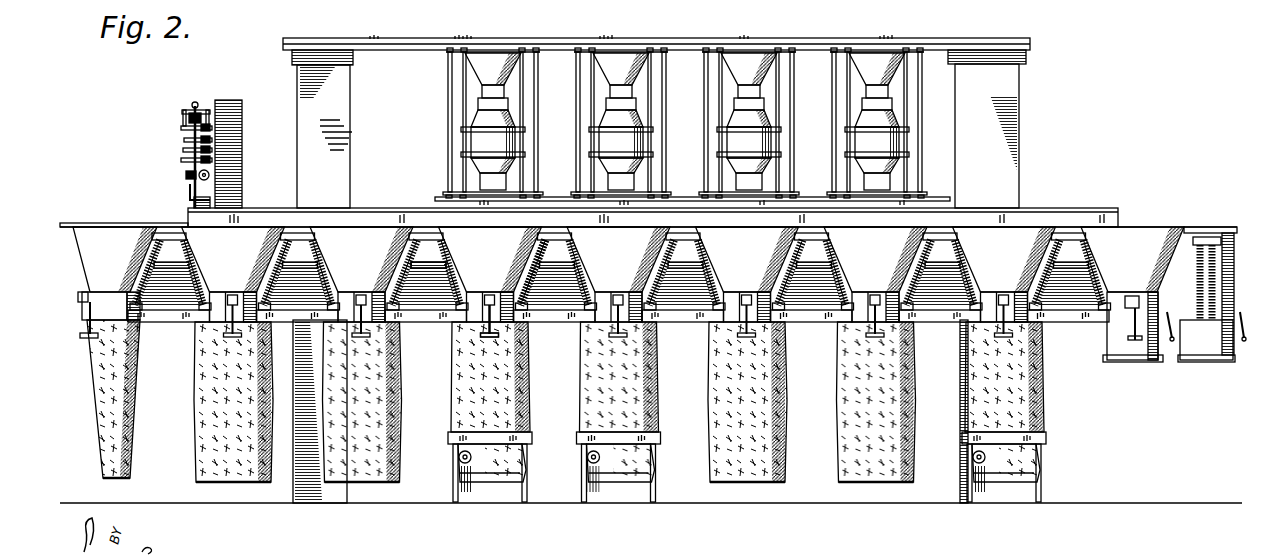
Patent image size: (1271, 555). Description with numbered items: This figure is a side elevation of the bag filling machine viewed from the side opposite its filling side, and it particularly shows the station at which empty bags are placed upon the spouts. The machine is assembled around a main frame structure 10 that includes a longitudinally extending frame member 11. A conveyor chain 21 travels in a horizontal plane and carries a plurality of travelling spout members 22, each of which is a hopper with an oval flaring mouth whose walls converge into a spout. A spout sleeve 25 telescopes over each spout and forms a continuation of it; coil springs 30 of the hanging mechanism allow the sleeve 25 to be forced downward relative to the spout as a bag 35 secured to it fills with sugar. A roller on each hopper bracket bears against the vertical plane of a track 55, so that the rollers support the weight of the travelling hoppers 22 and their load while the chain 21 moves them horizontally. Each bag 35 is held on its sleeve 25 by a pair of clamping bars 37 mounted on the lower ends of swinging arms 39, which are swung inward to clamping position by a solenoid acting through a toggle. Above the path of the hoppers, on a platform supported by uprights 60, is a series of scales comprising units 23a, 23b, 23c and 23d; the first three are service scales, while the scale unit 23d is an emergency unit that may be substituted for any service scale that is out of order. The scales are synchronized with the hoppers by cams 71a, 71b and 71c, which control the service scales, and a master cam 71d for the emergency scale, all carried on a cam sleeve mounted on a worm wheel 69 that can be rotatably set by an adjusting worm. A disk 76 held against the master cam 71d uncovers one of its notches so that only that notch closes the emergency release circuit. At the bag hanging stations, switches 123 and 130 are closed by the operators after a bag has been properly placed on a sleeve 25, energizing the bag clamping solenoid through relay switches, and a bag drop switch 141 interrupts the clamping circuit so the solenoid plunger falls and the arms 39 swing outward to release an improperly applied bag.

The main frame structure 10 is at (1022, 207).
The longitudinally extending frame member 11 is at (294, 226).
The travelling spout member 22 is at (628, 282).
The conveyor chain 21 is at (432, 265).
The scale unit 23a is at (498, 133).
The scale unit 23b is at (626, 133).
The scale unit 23c is at (754, 133).
The emergency scale unit 23d is at (882, 133).
The spout sleeve 25 is at (1107, 350).
The coil spring 30 is at (530, 290).
The bag 35 is at (590, 355).
The clamping bar 37 is at (485, 334).
The swinging arm 39 is at (488, 318).
The track 55 is at (153, 322).
The upright 60 is at (298, 80).
The worm wheel 69 is at (188, 179).
The cam 71a is at (180, 160).
The cam 71b is at (182, 149).
The cam 71c is at (183, 138).
The master cam 71d is at (181, 127).
The disk 76 is at (183, 125).
The switch 123 is at (462, 460).
The switch 130 is at (590, 460).
The bag drop switch 141 is at (978, 462).